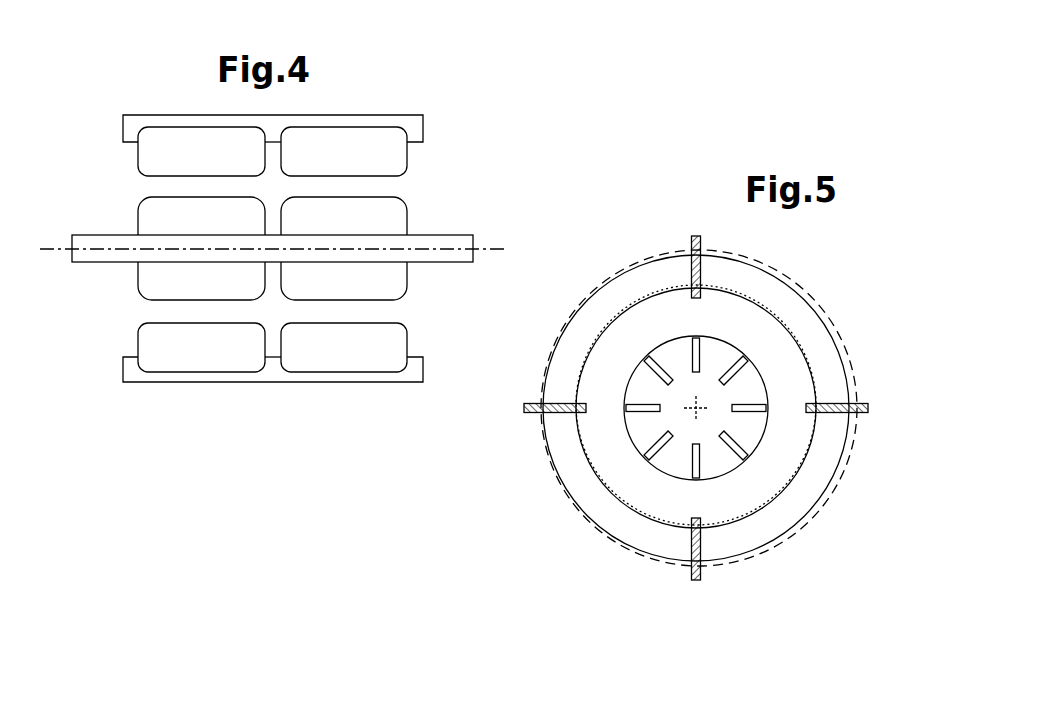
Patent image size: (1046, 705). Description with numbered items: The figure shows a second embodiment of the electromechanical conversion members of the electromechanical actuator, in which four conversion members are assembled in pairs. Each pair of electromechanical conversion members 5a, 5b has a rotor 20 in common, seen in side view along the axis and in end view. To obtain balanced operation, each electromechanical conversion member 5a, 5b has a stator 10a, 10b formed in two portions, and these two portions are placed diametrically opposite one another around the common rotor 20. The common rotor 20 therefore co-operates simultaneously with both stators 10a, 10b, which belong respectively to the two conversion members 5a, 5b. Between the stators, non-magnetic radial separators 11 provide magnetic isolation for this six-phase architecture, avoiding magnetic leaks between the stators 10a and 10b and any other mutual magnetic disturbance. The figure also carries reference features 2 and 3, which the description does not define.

In FIG. 4, the rotation axis 2 is at (57, 249).
In FIG. 4, the shaft 3 is at (108, 235).
In FIG. 4, the electromechanical conversion member 5a is at (254, 201).
In FIG. 5, the electromechanical conversion member 5a is at (717, 388).
In FIG. 4, the electromechanical conversion member 5b is at (149, 84).
In FIG. 5, the electromechanical conversion member 5b is at (673, 397).
In FIG. 4, the stator 10a is at (272, 249).
In FIG. 5, the stator 10a is at (626, 291).
In FIG. 4, the stator 10b is at (251, 164).
In FIG. 5, the stator 10b is at (780, 302).
In FIG. 5, the non-magnetic radial separators 11 is at (696, 236).
In FIG. 4, the rotor 20 is at (217, 294).
In FIG. 5, the rotor 20 is at (718, 460).